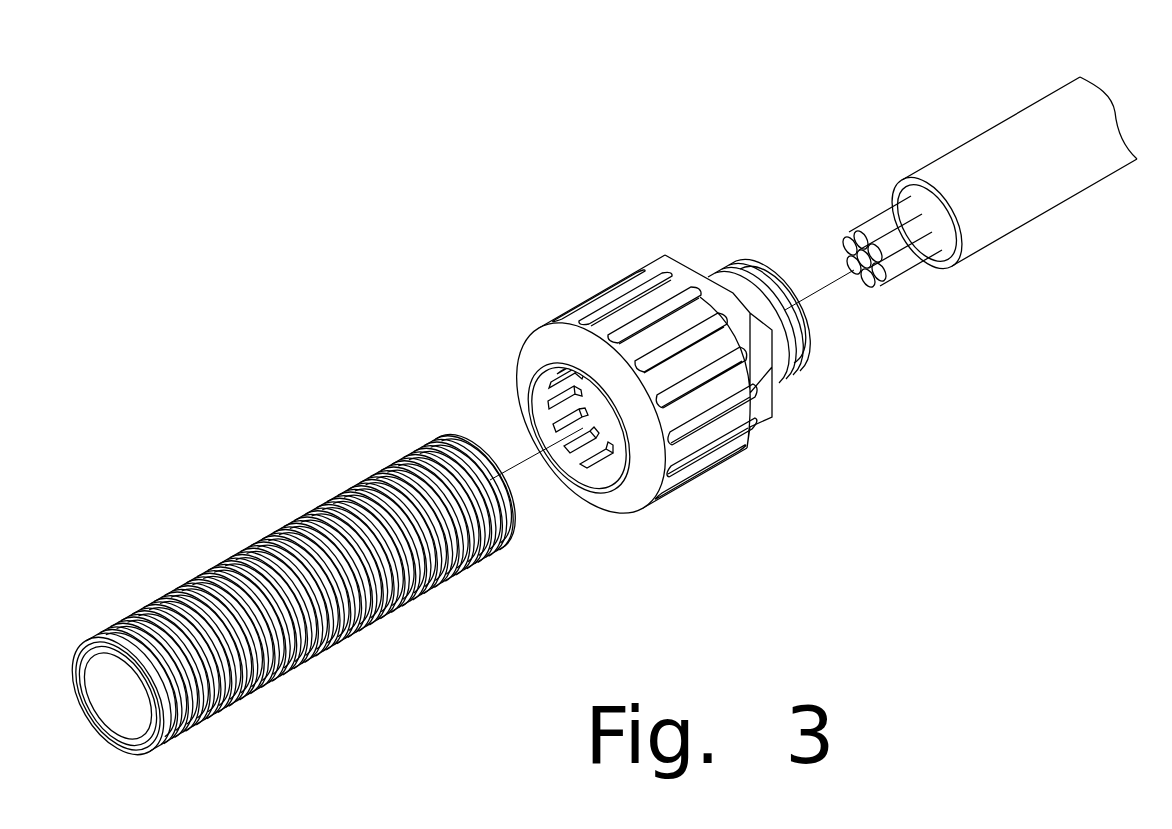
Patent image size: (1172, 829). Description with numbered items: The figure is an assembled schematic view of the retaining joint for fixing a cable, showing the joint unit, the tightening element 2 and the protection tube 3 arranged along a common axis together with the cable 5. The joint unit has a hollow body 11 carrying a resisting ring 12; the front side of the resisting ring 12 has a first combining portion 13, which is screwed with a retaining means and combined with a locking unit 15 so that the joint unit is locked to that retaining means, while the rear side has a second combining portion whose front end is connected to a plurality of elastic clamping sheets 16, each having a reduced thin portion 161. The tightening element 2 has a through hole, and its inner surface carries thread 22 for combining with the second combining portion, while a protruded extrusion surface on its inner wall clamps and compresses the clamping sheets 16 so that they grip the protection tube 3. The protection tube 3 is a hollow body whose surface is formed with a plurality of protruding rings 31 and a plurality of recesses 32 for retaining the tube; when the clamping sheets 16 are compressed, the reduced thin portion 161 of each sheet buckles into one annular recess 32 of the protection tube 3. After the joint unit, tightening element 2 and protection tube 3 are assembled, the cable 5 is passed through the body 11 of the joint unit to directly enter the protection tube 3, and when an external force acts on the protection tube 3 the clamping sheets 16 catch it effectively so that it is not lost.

The tightening element 2 is at (580, 282).
The protection tube 3 is at (257, 510).
The cable 5 is at (1018, 138).
The hollow body 11 is at (660, 252).
The resisting ring 12 is at (695, 282).
The first combining portion 13 is at (783, 330).
The locking unit 15 is at (772, 347).
The elastic clamping sheets 16 is at (552, 377).
The thread 22 is at (517, 427).
The protruding rings 31 is at (387, 477).
The recesses 32 is at (403, 483).
The reduced thin portion 161 is at (581, 470).